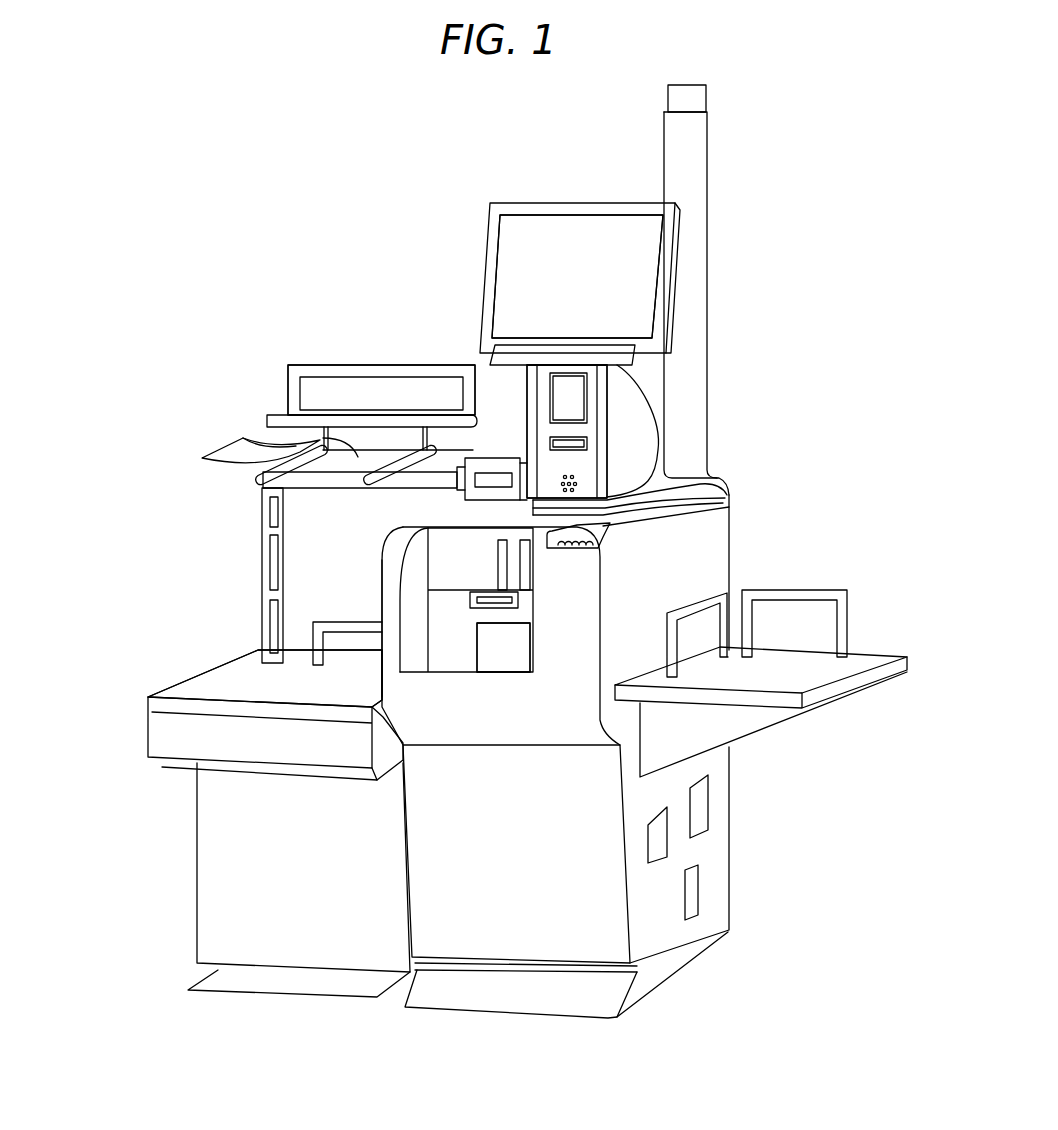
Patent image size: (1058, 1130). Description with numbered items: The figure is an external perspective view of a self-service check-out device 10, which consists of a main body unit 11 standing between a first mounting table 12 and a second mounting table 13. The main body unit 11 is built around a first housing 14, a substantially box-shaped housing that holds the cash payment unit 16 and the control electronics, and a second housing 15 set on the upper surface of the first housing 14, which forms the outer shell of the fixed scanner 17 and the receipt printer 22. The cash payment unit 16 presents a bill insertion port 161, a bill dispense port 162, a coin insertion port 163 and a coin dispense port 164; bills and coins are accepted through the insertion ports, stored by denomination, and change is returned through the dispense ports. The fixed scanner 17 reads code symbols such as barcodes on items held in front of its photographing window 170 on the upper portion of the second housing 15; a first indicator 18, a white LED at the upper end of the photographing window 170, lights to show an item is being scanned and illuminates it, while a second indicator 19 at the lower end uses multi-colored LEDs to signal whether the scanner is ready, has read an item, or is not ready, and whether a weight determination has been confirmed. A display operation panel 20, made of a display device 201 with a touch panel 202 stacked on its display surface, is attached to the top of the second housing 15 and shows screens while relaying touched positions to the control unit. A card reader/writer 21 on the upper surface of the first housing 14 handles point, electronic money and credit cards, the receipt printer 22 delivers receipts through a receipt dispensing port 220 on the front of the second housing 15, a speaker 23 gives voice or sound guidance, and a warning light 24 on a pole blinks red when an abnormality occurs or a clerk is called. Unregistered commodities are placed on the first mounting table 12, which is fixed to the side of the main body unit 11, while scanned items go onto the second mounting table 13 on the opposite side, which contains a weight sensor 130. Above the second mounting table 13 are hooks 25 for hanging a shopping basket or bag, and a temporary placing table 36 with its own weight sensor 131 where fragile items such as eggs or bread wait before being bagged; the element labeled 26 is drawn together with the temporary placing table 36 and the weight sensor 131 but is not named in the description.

The self-service check-out device 10 is at (300, 113).
The main body unit 11 is at (430, 1020).
The first mounting table 12 is at (760, 680).
The second mounting table 13 is at (228, 682).
The weight sensor 130 is at (265, 678).
The first housing 14 is at (705, 563).
The second housing 15 is at (570, 388).
The cash payment unit 16 is at (453, 657).
The bill insertion port 161 is at (527, 580).
The bill dispense port 162 is at (493, 562).
The coin insertion port 163 is at (703, 518).
The coin dispense port 164 is at (503, 672).
The fixed scanner 17 is at (632, 403).
The photographing window 170 is at (567, 431).
The first indicator 18 is at (555, 365).
The second indicator 19 is at (505, 395).
The display operation panel 20 is at (515, 203).
The display device 201 is at (608, 238).
The touch panel 202 is at (577, 276).
The card reader/writer 21 is at (502, 447).
The receipt printer 22 is at (630, 447).
The receipt dispensing port 220 is at (587, 447).
The speaker 23 is at (575, 485).
The warning light 24 is at (707, 102).
The hooks 25 is at (203, 458).
The customer display 26 is at (278, 412).
The weight sensor 131 is at (381, 390).
The temporary placing table 36 is at (323, 438).